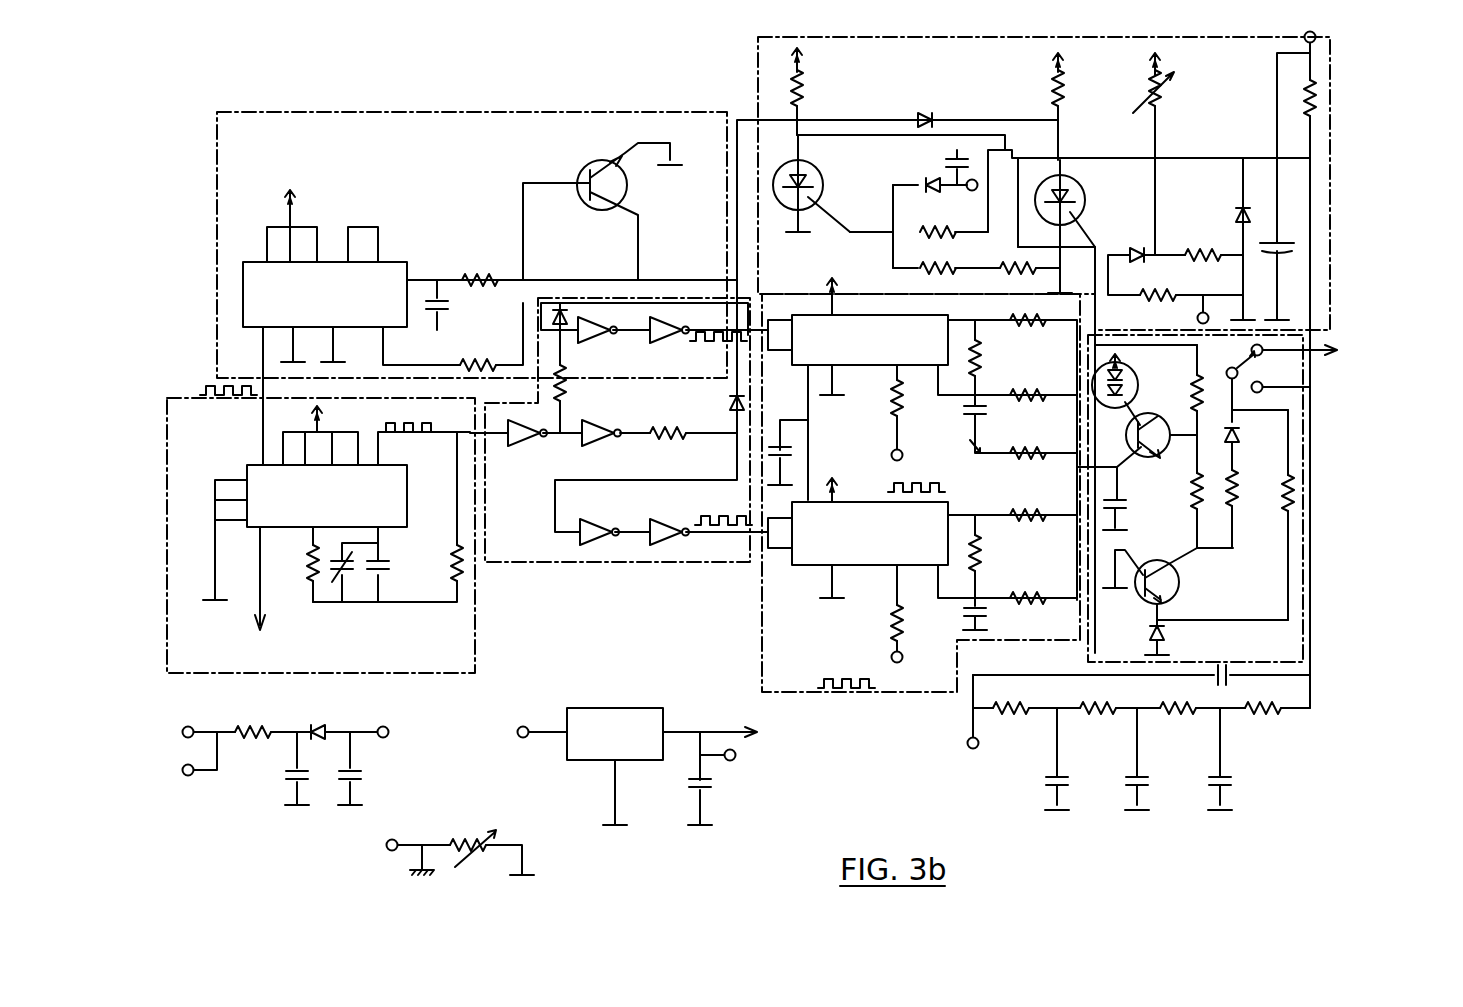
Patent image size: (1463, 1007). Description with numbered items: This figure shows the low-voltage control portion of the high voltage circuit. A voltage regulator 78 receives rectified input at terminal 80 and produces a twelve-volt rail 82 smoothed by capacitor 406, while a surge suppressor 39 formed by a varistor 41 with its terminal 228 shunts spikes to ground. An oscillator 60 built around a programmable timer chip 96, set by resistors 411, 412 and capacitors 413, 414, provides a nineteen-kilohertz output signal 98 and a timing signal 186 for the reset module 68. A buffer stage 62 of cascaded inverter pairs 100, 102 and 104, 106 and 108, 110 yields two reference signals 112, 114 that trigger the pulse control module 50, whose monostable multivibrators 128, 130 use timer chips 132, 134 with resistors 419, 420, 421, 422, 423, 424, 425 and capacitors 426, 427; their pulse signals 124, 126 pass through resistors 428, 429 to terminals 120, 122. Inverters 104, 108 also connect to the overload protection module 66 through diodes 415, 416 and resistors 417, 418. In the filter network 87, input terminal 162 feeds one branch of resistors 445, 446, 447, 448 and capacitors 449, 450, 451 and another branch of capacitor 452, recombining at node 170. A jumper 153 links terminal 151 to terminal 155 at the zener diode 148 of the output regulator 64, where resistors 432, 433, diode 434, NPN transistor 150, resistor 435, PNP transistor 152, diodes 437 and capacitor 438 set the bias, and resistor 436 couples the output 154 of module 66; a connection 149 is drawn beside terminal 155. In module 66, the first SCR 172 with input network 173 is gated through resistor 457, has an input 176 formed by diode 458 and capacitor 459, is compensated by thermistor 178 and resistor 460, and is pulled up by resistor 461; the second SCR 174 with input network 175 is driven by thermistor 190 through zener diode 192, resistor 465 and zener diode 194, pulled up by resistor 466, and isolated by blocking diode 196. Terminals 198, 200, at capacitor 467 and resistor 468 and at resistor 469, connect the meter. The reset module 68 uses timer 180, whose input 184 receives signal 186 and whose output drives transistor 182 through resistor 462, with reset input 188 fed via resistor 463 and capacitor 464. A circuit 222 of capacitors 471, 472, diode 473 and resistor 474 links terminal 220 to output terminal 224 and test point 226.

The overload protection module 66 is at (891, 37).
The reset module 68 is at (495, 113).
The timer 180 is at (337, 212).
The output transistor 182 is at (591, 158).
The reset input 188 is at (428, 276).
The resistor 463 is at (482, 274).
The capacitor 464 is at (444, 311).
The resistor 462 is at (472, 352).
The diode 415 is at (550, 301).
The inverter 104 is at (588, 316).
The inverter 106 is at (672, 316).
The buffered output reference signal 114 is at (722, 320).
The timing signal 186 is at (205, 386).
The input 184 is at (240, 356).
The oscillator 60 is at (198, 404).
The programmable timer chip 96 is at (395, 460).
The output signal 98 is at (376, 429).
The inverter 100 is at (528, 448).
The inverter 102 is at (605, 420).
The resistor 417 is at (562, 384).
The diode 416 is at (732, 396).
The resistor 418 is at (666, 428).
The inverter 108 is at (598, 525).
The inverter 110 is at (658, 523).
The buffered output reference signal 112 is at (706, 517).
The buffer stage 62 is at (500, 565).
The resistor 411 is at (454, 546).
The resistor 412 is at (310, 562).
The capacitor 413 is at (382, 562).
The capacitor 414 is at (340, 606).
The output terminal 224 is at (189, 726).
The resistor 474 is at (247, 726).
The diode 473 is at (318, 728).
The terminal 220 is at (390, 730).
The test point terminal 226 is at (190, 778).
The capacitor 472 is at (285, 766).
The capacitor 471 is at (356, 765).
The circuit 222 is at (274, 806).
The green wire terminal 228 is at (384, 852).
The varistor 41 is at (468, 838).
The surge suppressor 39 is at (524, 842).
The terminal 80 is at (520, 726).
The voltage regulator 78 is at (642, 714).
The +12 Volt rail 82 is at (743, 740).
The capacitor 406 is at (686, 792).
The pulse control module 50 is at (758, 620).
The second monostable multivibrator 130 is at (872, 392).
The second timer chip 134 is at (790, 370).
The resistor 425 is at (1024, 324).
The resistor 424 is at (975, 372).
The resistor 423 is at (1040, 386).
The capacitor 427 is at (966, 412).
The resistor 422 is at (1000, 446).
The resistor 429 is at (893, 422).
The output terminal 122 is at (906, 446).
The pulse signal 126 is at (896, 480).
The first monostable multivibrator 128 is at (814, 584).
The first timer chip 132 is at (862, 578).
The resistor 421 is at (1022, 512).
The resistor 420 is at (980, 556).
The resistor 419 is at (1034, 590).
The capacitor 426 is at (964, 614).
The resistor 428 is at (884, 634).
The output terminal 120 is at (892, 654).
The pulse signal output 124 is at (820, 684).
The resistor 461 is at (806, 92).
The blocking diode 196 is at (919, 114).
The first SCR 172 is at (784, 162).
The input network 173 is at (866, 205).
The resistor 457 is at (934, 228).
The diode 458 is at (928, 178).
The capacitor 459 is at (958, 150).
The input 176 is at (971, 191).
The thermistor 178 is at (920, 270).
The resistor 460 is at (1014, 268).
The resistor 466 is at (1056, 94).
The second SCR 174 is at (1046, 169).
The optocoupler output 175 is at (1111, 176).
The thermistor 190 is at (1142, 96).
The terminal 198 is at (1304, 37).
The resistor 468 is at (1319, 100).
The capacitor 467 is at (1285, 243).
The zener diode 192 is at (1130, 250).
The resistor 465 is at (1194, 252).
The zener diode 194 is at (1240, 206).
The resistor 469 is at (1139, 295).
The terminal 200 is at (1206, 310).
The connection line 149 is at (1260, 340).
The output 154 is at (1124, 344).
The resistor 436 is at (1195, 373).
The terminal 155 is at (1236, 352).
The switch or jumper 153 is at (1252, 378).
The node 170 is at (1308, 381).
The terminal 151 is at (1262, 393).
The output regulator 64 is at (1306, 566).
The diodes 437 is at (1138, 382).
The PNP transistor 152 is at (1126, 434).
The capacitor 438 is at (1119, 499).
The resistor 435 is at (1197, 512).
The NPN transistor 150 is at (1160, 566).
The diode 434 is at (1151, 632).
The Zener diode 148 is at (1239, 432).
The resistor 433 is at (1288, 478).
The resistor 432 is at (1236, 508).
The capacitor 452 is at (1230, 672).
The input terminal 162 is at (967, 740).
The resistor 445 is at (1010, 700).
The resistor 446 is at (1085, 706).
The resistor 447 is at (1165, 706).
The resistor 448 is at (1273, 714).
The capacitor 449 is at (1050, 780).
The capacitor 450 is at (1132, 780).
The capacitor 451 is at (1214, 780).
The filter network 87 is at (1039, 785).